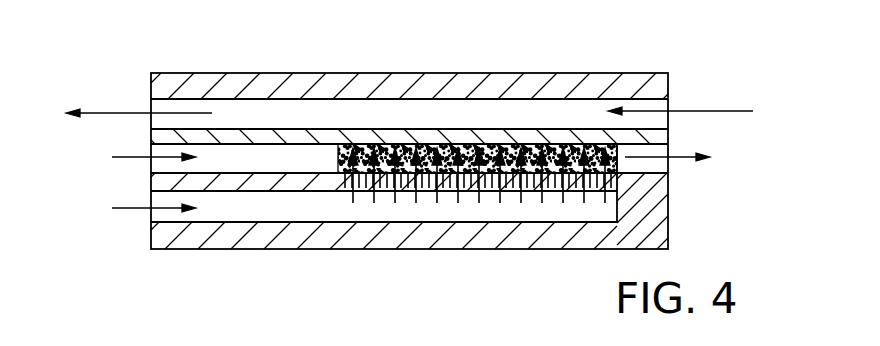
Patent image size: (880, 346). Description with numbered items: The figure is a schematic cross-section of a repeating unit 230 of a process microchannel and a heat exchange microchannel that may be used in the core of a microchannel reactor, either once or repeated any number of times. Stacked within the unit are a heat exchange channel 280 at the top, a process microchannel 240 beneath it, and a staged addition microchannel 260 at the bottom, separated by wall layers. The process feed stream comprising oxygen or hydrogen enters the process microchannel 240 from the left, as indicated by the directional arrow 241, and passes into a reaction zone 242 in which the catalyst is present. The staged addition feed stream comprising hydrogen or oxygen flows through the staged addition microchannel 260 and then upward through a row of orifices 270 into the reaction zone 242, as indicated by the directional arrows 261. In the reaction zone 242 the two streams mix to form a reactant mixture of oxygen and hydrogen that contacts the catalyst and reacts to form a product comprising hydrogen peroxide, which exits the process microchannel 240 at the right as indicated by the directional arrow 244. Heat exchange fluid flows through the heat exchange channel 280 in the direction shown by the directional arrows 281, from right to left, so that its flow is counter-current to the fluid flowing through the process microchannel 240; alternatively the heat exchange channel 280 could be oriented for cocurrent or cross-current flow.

The repeating unit 230 is at (266, 53).
The heat exchange channel 280 is at (392, 117).
The directional arrows 281 is at (117, 112).
The reaction zone 242 is at (488, 160).
The directional arrow 244 is at (685, 157).
The directional arrow 241 is at (133, 157).
The process microchannel 240 is at (247, 160).
The directional arrows 261 is at (134, 207).
The orifices 270 is at (456, 182).
The staged addition microchannel 260 is at (298, 208).